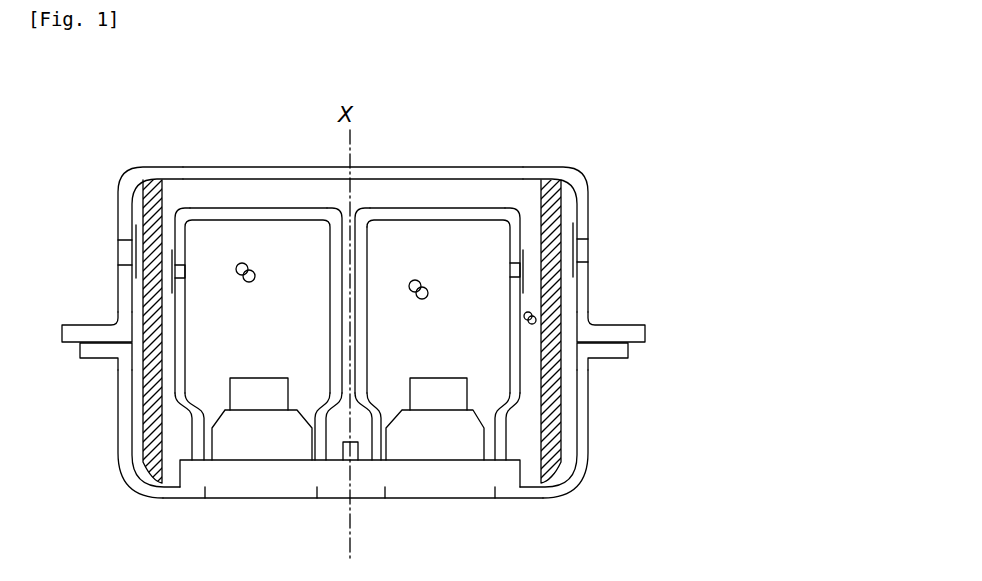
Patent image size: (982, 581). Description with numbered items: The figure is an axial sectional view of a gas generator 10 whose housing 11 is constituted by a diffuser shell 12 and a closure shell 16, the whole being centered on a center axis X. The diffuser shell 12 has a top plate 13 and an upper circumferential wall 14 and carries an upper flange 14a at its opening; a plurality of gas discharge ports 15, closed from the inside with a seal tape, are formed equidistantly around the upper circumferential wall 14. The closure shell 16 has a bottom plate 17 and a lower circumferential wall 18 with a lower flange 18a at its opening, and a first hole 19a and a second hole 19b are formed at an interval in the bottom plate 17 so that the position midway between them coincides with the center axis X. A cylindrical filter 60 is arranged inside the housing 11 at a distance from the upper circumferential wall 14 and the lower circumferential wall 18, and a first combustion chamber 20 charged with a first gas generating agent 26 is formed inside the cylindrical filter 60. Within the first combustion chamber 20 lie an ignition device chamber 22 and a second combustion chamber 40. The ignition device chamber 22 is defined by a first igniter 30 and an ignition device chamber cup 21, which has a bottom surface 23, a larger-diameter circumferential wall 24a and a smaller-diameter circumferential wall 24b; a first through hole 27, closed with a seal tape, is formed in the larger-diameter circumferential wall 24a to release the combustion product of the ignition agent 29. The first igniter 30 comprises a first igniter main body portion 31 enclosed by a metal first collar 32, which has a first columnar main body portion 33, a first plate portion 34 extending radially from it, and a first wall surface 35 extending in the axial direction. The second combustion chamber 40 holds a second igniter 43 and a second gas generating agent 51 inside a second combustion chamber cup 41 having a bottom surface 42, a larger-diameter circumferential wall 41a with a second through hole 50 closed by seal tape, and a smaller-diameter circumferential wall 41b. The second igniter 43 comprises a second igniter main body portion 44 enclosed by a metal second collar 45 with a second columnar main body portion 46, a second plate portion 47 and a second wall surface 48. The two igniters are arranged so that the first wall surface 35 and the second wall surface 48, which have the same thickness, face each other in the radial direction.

The gas generator 10 is at (432, 156).
The housing 11 is at (735, 288).
The diffuser shell 12 is at (592, 289).
The top plate 13 is at (285, 166).
The upper circumferential wall 14 is at (584, 192).
The upper flange 14a is at (95, 333).
The gas discharge port 15 is at (584, 250).
The closure shell 16 is at (594, 386).
The bottom plate 17 is at (530, 497).
The lower circumferential wall 18 is at (578, 448).
The lower flange 18a is at (96, 356).
The first hole 19a is at (205, 490).
The second hole 19b is at (488, 492).
The first combustion chamber 20 is at (512, 186).
The ignition device chamber cup 21 is at (205, 205).
The ignition device chamber 22 is at (302, 258).
The bottom surface 23 is at (245, 207).
The larger-diameter circumferential wall 24a is at (180, 295).
The smaller-diameter circumferential wall 24b is at (180, 428).
The first gas generating agent 26 is at (527, 322).
The first through hole 27 is at (183, 272).
The ignition agent 29 is at (257, 278).
The first igniter 30 is at (243, 372).
The first igniter main body portion 31 is at (283, 377).
The first collar 32 is at (288, 496).
The first columnar main body portion 33 is at (232, 430).
The first plate portion 34 is at (187, 470).
The first wall surface 35 is at (344, 452).
The second combustion chamber 40 is at (482, 258).
The second combustion chamber cup 41 is at (392, 205).
The larger-diameter circumferential wall 41a is at (368, 262).
The smaller-diameter circumferential wall 41b is at (500, 432).
The bottom surface 42 is at (460, 207).
The second igniter 43 is at (455, 372).
The second igniter main body portion 44 is at (418, 372).
The second collar 45 is at (443, 499).
The second columnar main body portion 46 is at (398, 440).
The second plate portion 47 is at (365, 480).
The second wall surface 48 is at (355, 448).
The second through hole 50 is at (512, 270).
The second gas generating agent 51 is at (416, 294).
The cylindrical filter 60 is at (157, 450).